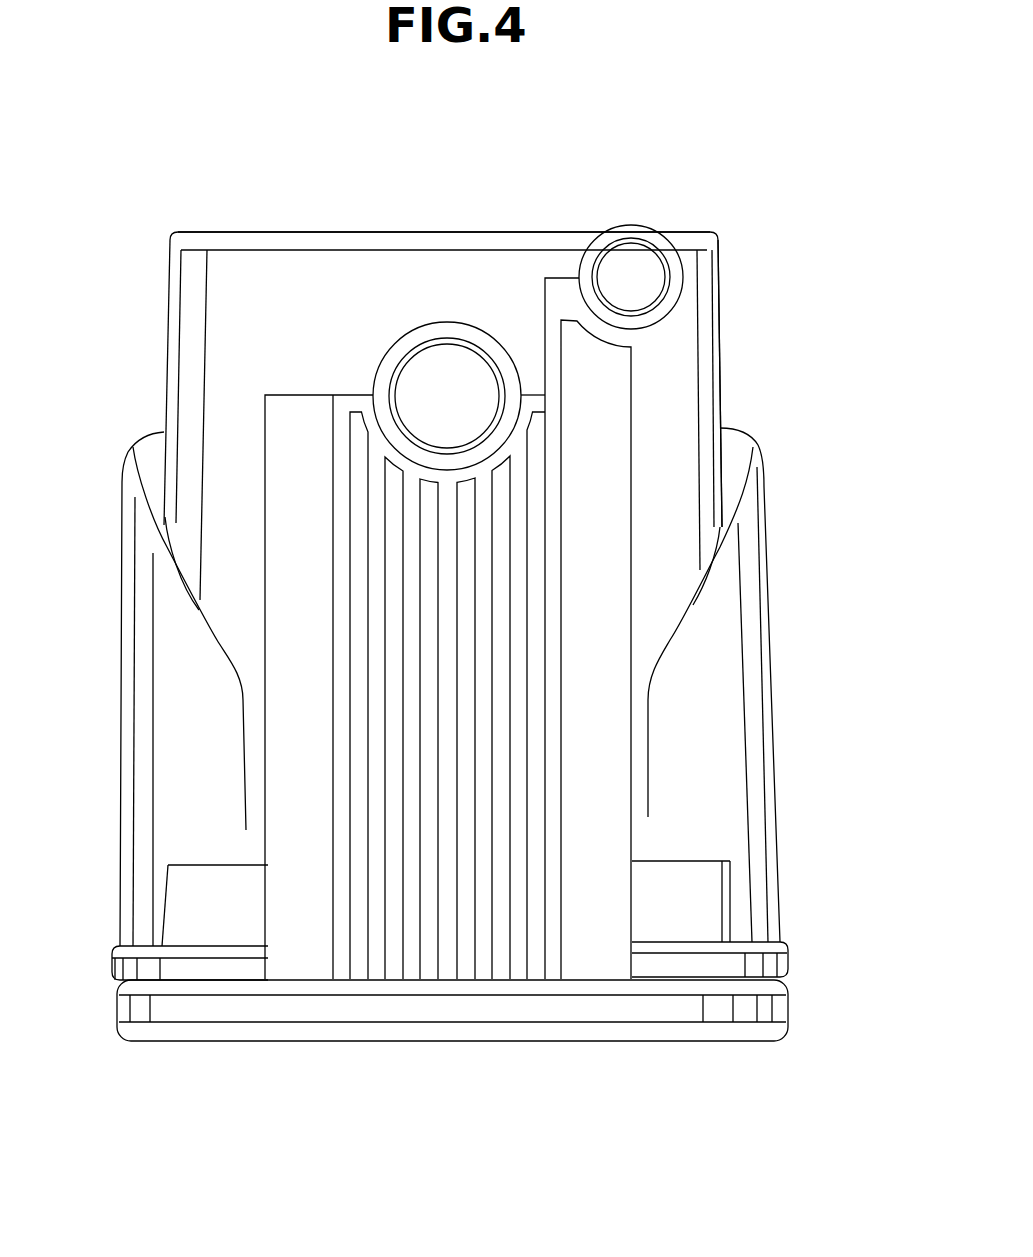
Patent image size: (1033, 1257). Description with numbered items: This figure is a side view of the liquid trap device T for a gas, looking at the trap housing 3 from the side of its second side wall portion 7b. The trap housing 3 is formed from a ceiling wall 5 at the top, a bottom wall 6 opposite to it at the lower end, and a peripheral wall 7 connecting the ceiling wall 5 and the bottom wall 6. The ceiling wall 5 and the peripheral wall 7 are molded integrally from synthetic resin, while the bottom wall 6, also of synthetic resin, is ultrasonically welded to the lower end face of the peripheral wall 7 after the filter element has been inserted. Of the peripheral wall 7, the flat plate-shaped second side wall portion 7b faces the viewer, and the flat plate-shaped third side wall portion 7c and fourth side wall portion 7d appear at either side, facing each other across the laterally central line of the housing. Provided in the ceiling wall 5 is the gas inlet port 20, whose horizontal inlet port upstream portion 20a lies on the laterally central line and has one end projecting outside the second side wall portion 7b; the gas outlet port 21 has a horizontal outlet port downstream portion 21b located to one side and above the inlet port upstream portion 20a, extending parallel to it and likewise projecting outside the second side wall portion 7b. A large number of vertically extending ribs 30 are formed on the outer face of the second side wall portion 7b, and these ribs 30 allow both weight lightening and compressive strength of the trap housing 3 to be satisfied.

The trap housing 3 is at (724, 358).
The ceiling wall 5 is at (411, 232).
The bottom wall 6 is at (445, 1020).
The peripheral wall 7 is at (682, 547).
The second side wall portion 7b is at (297, 435).
The third side wall portion 7c is at (762, 727).
The fourth side wall portion 7d is at (120, 721).
The gas inlet port 20 is at (424, 367).
The inlet port upstream portion 20a is at (452, 330).
The gas outlet port 21 is at (691, 246).
The outlet port downstream portion 21b is at (670, 248).
The ribs 30 is at (450, 543).
The liquid trap device T is at (683, 212).